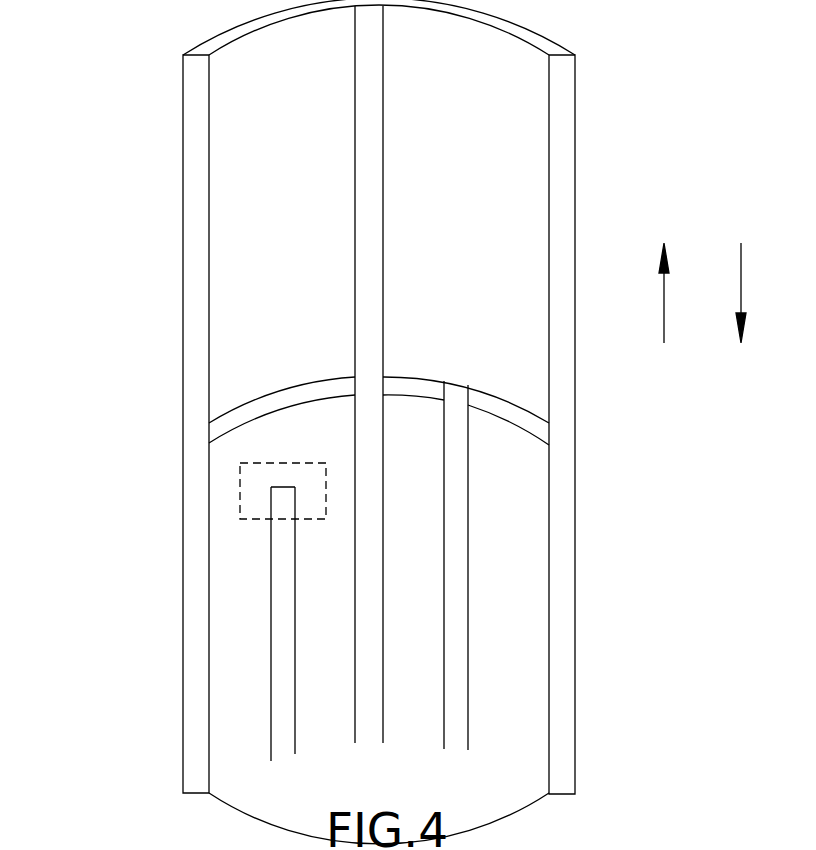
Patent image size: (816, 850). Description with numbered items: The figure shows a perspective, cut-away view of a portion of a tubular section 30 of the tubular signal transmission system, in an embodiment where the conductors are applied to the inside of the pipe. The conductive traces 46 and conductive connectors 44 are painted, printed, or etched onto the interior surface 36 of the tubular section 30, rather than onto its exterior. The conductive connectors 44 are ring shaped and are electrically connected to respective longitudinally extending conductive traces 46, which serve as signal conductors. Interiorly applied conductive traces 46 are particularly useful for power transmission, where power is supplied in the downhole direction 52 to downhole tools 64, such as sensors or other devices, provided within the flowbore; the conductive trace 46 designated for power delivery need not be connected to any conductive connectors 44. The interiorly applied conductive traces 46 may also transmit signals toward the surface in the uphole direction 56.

The tubular section 30 is at (192, 337).
The interior surface 36 is at (507, 203).
The conductive connectors 44 is at (538, 427).
The conductive traces 46 is at (367, 596).
The downhole direction 52 is at (680, 293).
The uphole direction 56 is at (757, 293).
The downhole tools 64 is at (240, 497).